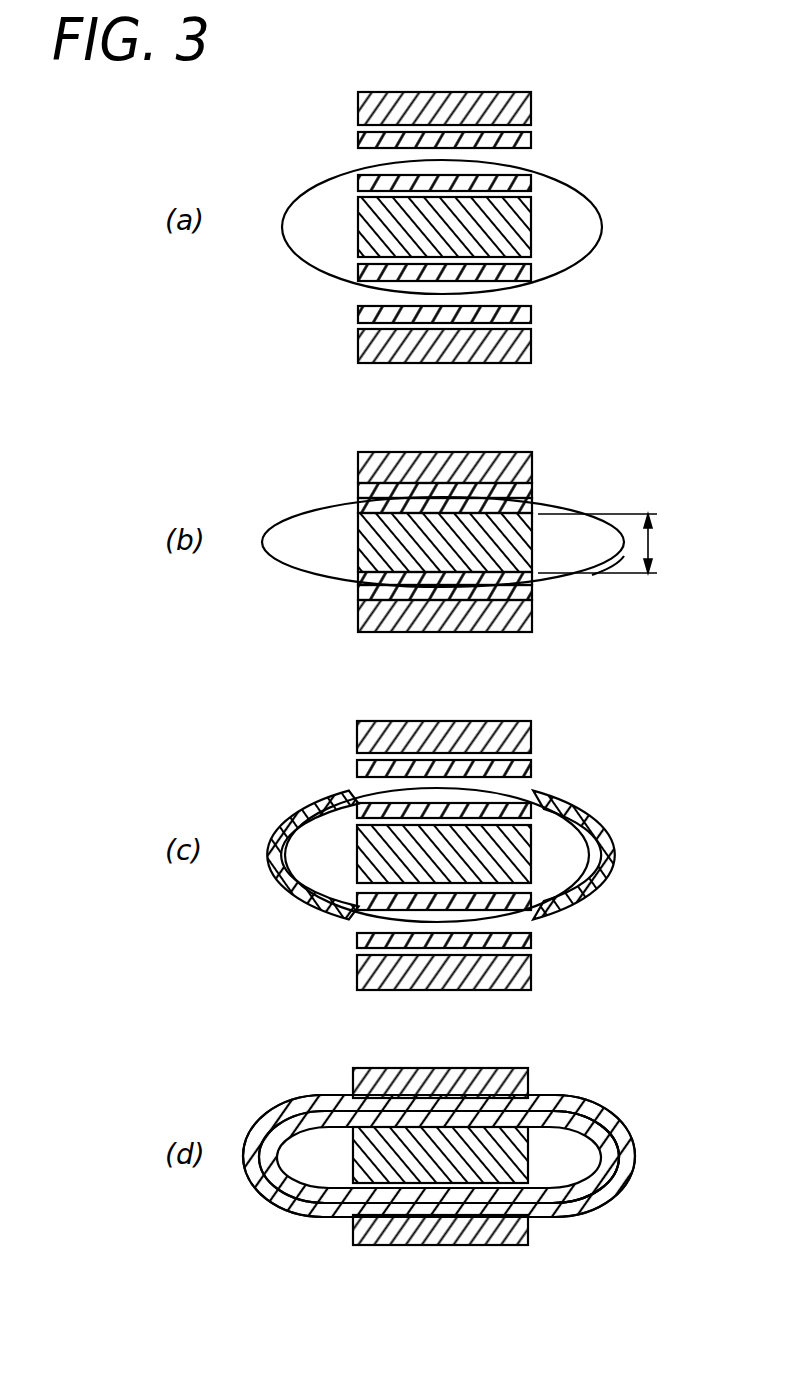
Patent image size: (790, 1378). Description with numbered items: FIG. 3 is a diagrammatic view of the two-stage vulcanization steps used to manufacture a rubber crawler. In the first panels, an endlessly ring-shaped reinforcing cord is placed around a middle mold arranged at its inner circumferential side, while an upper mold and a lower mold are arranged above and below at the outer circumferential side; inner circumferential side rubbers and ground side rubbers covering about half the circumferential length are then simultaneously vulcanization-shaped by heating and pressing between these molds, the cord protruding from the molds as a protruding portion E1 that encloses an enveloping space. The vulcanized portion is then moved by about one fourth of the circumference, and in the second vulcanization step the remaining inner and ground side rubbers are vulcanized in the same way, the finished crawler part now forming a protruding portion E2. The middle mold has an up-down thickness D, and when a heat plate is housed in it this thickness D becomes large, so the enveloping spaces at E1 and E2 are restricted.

The thickness of the middle mold D is at (608, 543).
The protruding portion of the reinforcing cord E1 is at (592, 575).
The protruding portion of the vulcanized crawler part E2 is at (598, 1110).